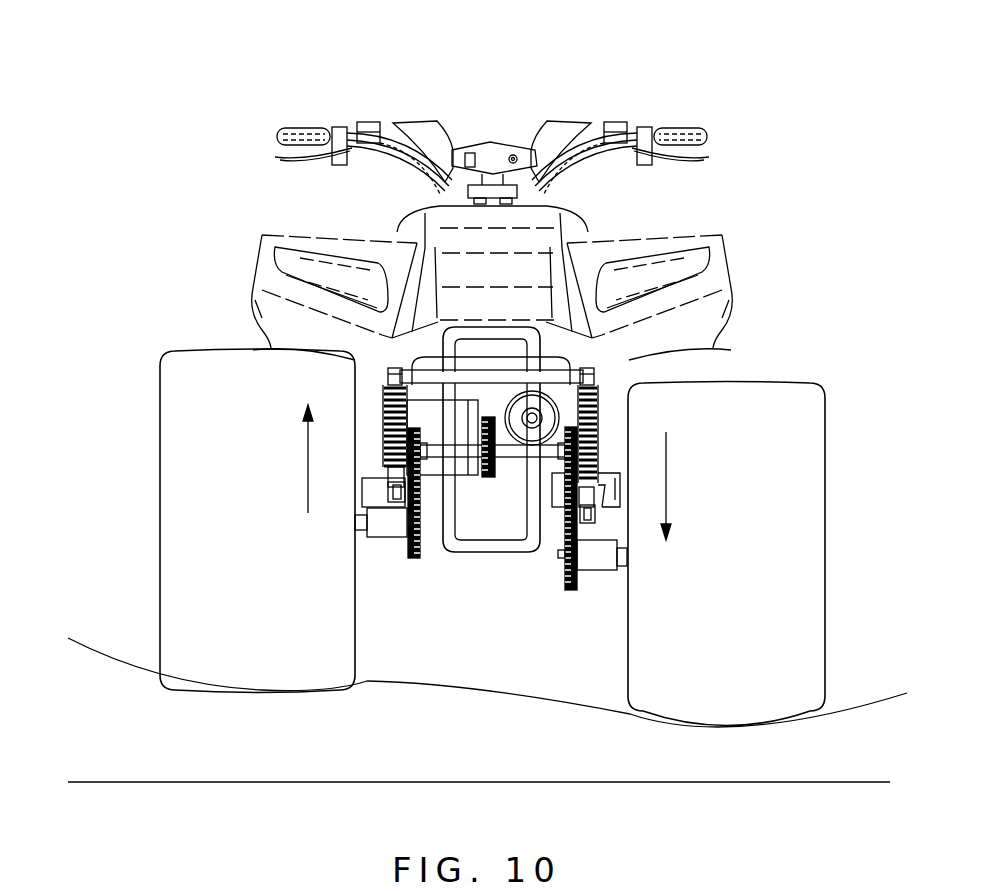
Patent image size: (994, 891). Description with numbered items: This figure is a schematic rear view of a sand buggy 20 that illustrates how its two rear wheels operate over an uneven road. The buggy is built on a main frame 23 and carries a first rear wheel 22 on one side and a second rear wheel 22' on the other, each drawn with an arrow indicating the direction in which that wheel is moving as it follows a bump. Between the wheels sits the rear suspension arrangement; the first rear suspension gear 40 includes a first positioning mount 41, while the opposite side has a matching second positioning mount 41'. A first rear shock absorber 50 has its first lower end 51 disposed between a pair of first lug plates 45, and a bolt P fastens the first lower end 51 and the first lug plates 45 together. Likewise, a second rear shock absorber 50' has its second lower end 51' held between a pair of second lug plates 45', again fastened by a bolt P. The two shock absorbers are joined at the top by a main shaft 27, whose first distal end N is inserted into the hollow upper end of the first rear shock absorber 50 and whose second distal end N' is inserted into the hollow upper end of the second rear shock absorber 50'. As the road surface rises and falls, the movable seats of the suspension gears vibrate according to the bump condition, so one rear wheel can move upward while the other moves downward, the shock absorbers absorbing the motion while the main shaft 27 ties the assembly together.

The all-terrain vehicle 20 is at (489, 95).
The first rear wheel 22 is at (726, 577).
The second rear wheel 22' is at (257, 540).
The main frame 23 is at (492, 326).
The main shaft 27 is at (489, 378).
The first rear suspension gear 40 is at (543, 596).
The first positioning mount 41 is at (597, 508).
The second positioning mount 41' is at (388, 479).
The first lug plates 45 is at (592, 546).
The second lug plates 45' is at (381, 519).
The first rear shock absorber 50 is at (619, 434).
The second rear shock absorber 50' is at (363, 426).
The first lower end 51 is at (564, 508).
The second lower end 51' is at (362, 470).
The first distal end N is at (599, 367).
The second distal end N' is at (382, 366).
The bolt P is at (385, 488).